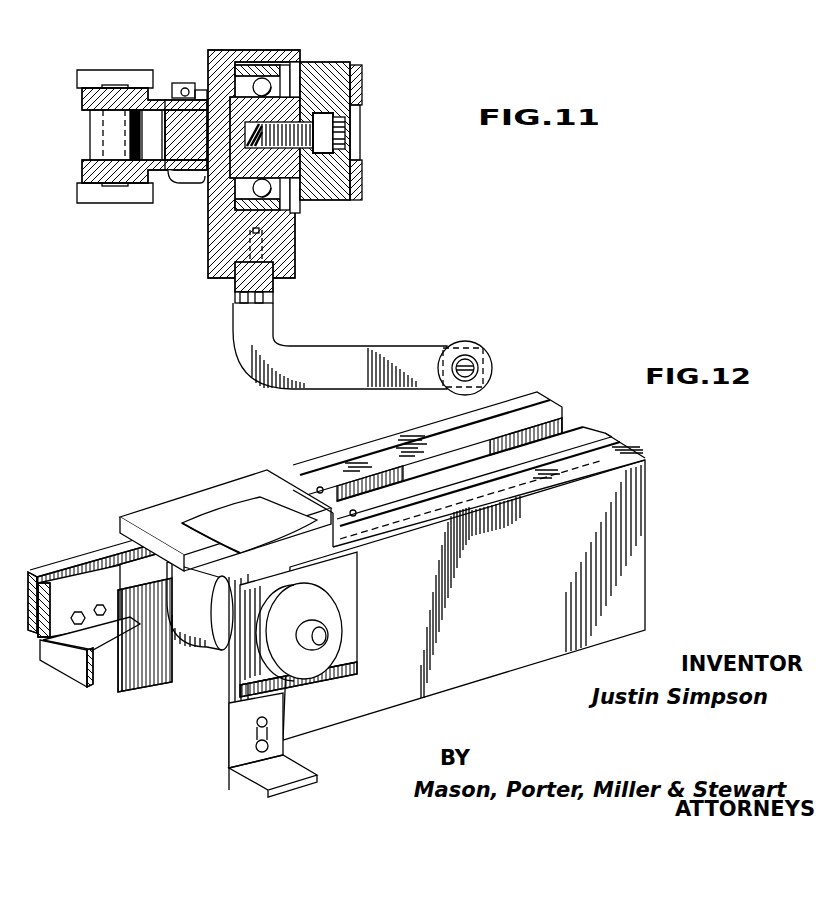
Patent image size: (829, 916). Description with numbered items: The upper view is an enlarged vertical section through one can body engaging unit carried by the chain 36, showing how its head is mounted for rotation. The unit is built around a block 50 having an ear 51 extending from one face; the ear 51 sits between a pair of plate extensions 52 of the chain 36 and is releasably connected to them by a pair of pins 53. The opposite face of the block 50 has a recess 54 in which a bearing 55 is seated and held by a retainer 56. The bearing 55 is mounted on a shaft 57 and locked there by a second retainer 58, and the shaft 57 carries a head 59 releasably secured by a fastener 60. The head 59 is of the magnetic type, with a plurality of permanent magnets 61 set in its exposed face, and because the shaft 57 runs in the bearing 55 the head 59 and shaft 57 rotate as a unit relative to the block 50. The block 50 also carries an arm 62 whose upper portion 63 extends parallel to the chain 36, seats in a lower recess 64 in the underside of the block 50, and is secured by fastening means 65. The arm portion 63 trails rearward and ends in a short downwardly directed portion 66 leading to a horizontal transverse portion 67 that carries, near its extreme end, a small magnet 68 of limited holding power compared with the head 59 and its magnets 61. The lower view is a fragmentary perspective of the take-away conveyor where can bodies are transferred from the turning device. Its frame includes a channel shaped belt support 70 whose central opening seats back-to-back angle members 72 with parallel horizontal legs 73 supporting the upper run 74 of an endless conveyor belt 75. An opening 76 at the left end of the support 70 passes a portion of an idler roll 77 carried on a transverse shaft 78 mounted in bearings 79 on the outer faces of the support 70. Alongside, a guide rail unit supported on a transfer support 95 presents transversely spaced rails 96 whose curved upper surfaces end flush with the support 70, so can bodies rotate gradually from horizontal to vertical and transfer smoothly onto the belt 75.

In FIG. 11, the chain 36 is at (95, 135).
In FIG. 11, the block 50 is at (226, 60).
In FIG. 11, the ear 51 is at (173, 185).
In FIG. 11, the plate extensions 52 is at (160, 97).
In FIG. 11, the pins 53 is at (195, 88).
In FIG. 11, the recess 54 is at (291, 65).
In FIG. 11, the bearing 55 is at (232, 226).
In FIG. 11, the retainer 56 is at (284, 205).
In FIG. 11, the shaft 57 is at (300, 100).
In FIG. 11, the retainer 58 is at (236, 97).
In FIG. 11, the head 59 is at (343, 111).
In FIG. 11, the fastener 60 is at (333, 137).
In FIG. 11, the permanent magnets 61 is at (362, 97).
In FIG. 11, the arm 62 is at (310, 345).
In FIG. 11, the upper portion 63 is at (235, 282).
In FIG. 11, the lower recess 64 is at (277, 270).
In FIG. 11, the fastening means 65 is at (245, 310).
In FIG. 11, the downwardly directed portion 66 is at (238, 330).
In FIG. 11, the transverse portion 67 is at (372, 353).
In FIG. 11, the small magnet 68 is at (467, 345).
In FIG. 12, the belt support 70 is at (650, 513).
In FIG. 12, the angle members 72 is at (592, 426).
In FIG. 12, the horizontal legs 73 is at (584, 408).
In FIG. 12, the upper run 74 is at (277, 505).
In FIG. 12, the endless conveyor belt 75 is at (193, 623).
In FIG. 12, the opening 76 is at (238, 503).
In FIG. 12, the idler roll 77 is at (217, 515).
In FIG. 12, the transverse shaft 78 is at (322, 637).
In FIG. 12, the bearings 79 is at (343, 612).
In FIG. 12, the transfer support 95 is at (74, 672).
In FIG. 12, the rails 96 is at (73, 570).